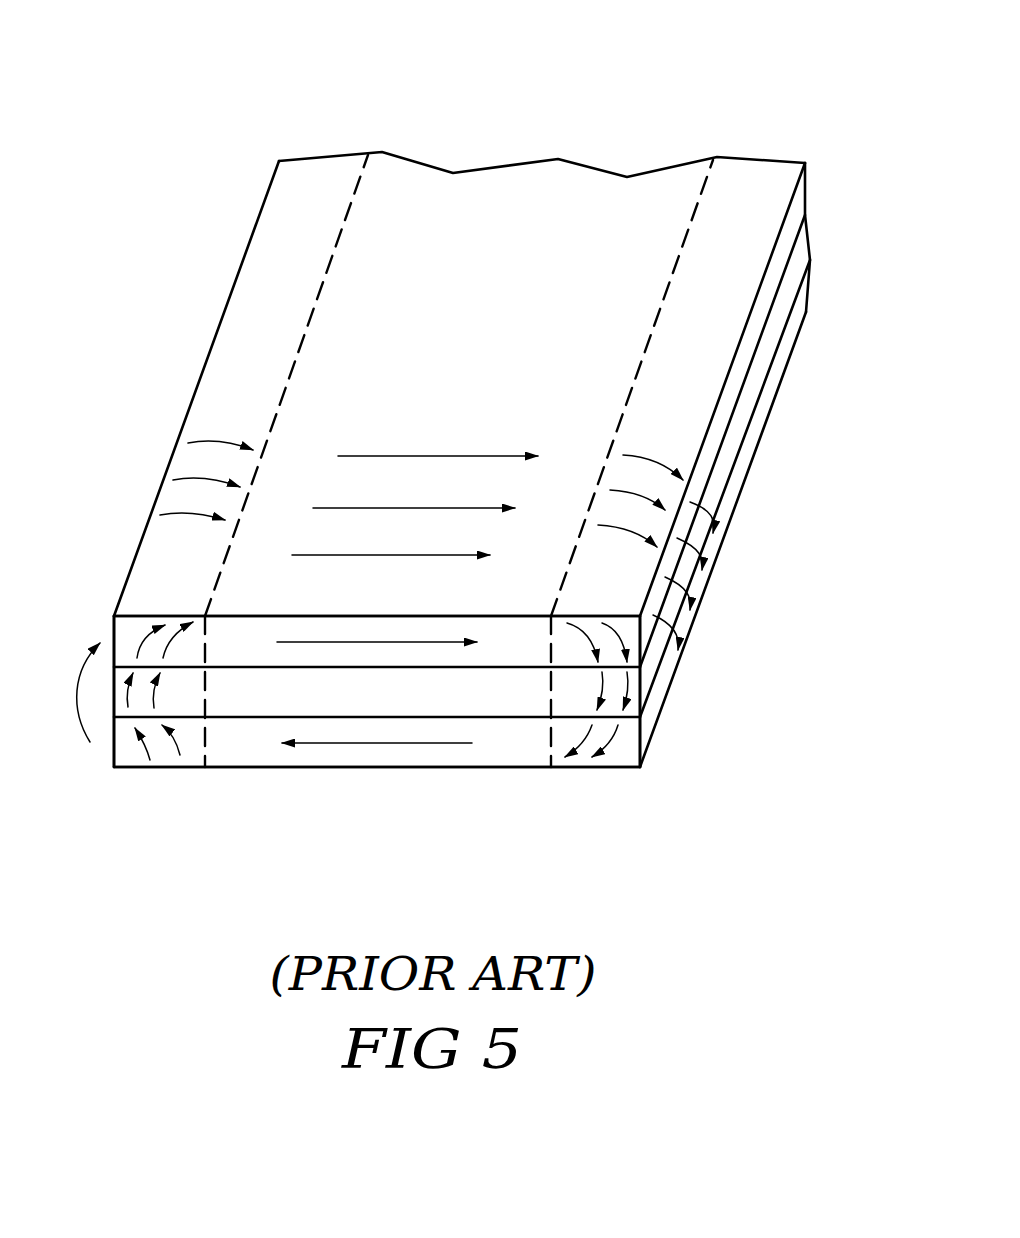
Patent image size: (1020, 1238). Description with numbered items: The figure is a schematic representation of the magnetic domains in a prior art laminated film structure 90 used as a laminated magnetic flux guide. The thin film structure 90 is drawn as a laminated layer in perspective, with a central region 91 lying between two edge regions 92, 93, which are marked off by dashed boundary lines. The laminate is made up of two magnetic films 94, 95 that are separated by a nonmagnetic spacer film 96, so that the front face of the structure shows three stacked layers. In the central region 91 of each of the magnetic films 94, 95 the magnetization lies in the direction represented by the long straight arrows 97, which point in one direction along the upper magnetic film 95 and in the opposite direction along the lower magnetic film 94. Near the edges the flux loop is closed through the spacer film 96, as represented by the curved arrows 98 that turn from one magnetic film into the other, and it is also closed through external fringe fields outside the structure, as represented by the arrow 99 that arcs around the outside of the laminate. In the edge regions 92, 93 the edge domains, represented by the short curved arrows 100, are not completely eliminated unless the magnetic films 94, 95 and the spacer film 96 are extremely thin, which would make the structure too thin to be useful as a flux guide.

The laminated film structure 90 is at (458, 122).
The central region 91 is at (520, 175).
The edge region 92 is at (328, 170).
The edge region 93 is at (752, 175).
The magnetic film 94 is at (232, 753).
The magnetic film 95 is at (223, 617).
The nonmagnetic spacer film 96 is at (183, 705).
The magnetization arrows 97 is at (440, 455).
The flux closure arrows 98 is at (115, 650).
The external fringe field arrow 99 is at (78, 697).
The edge domain arrows 100 is at (207, 442).